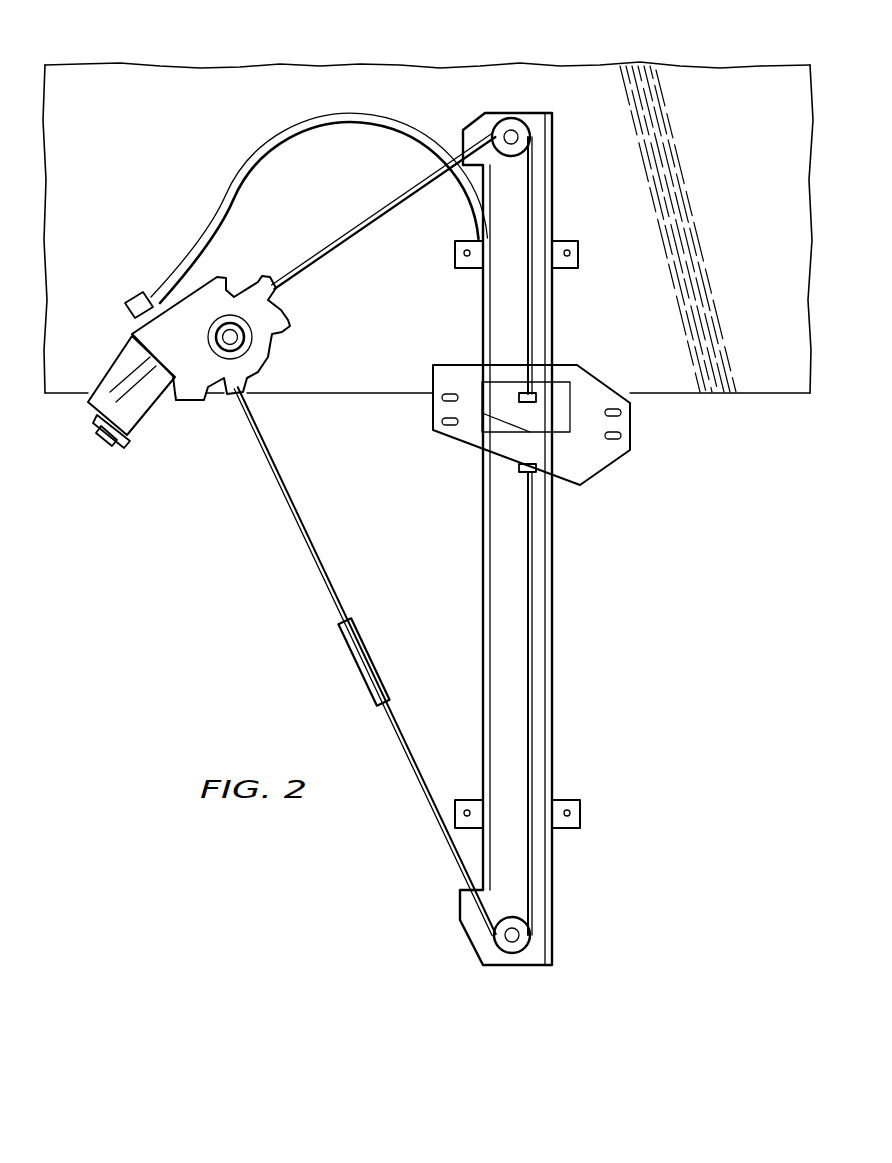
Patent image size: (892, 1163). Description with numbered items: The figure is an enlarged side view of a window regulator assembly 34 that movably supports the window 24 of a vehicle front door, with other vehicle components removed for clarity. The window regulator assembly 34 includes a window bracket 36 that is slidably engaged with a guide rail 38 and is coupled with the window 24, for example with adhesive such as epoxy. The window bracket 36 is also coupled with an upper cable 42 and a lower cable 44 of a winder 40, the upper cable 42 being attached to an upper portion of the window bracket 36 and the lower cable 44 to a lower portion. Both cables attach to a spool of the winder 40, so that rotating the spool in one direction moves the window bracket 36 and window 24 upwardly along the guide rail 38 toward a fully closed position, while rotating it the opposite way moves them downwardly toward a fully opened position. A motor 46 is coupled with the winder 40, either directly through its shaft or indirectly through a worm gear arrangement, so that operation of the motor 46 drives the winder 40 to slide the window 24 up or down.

The window 24 is at (318, 58).
The window regulator assembly 34 is at (376, 539).
The window bracket 36 is at (632, 425).
The guide rail 38 is at (553, 648).
The winder 40 is at (268, 358).
The upper cable 42 is at (363, 216).
The lower cable 44 is at (313, 563).
The motor 46 is at (110, 368).